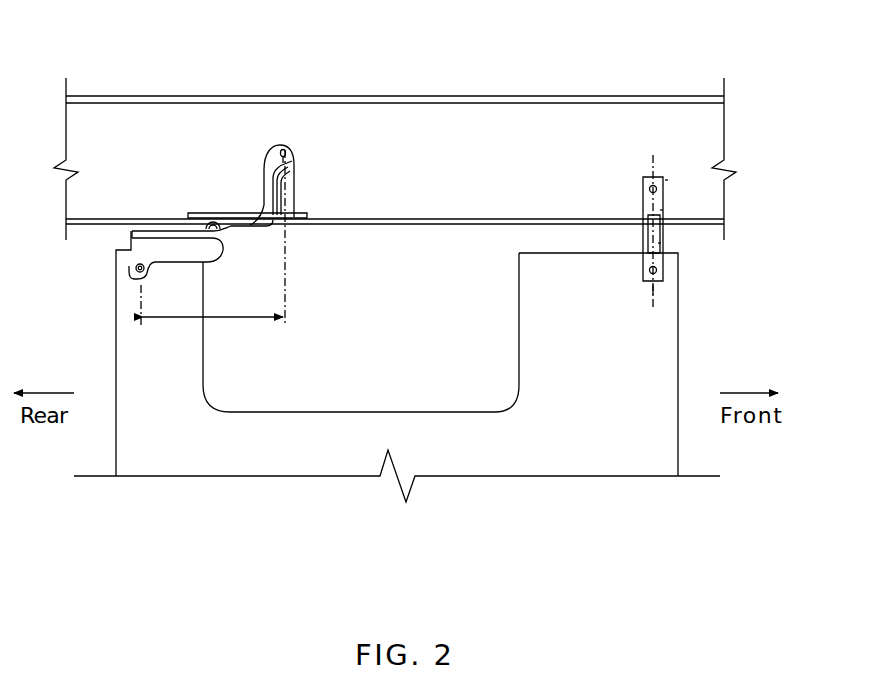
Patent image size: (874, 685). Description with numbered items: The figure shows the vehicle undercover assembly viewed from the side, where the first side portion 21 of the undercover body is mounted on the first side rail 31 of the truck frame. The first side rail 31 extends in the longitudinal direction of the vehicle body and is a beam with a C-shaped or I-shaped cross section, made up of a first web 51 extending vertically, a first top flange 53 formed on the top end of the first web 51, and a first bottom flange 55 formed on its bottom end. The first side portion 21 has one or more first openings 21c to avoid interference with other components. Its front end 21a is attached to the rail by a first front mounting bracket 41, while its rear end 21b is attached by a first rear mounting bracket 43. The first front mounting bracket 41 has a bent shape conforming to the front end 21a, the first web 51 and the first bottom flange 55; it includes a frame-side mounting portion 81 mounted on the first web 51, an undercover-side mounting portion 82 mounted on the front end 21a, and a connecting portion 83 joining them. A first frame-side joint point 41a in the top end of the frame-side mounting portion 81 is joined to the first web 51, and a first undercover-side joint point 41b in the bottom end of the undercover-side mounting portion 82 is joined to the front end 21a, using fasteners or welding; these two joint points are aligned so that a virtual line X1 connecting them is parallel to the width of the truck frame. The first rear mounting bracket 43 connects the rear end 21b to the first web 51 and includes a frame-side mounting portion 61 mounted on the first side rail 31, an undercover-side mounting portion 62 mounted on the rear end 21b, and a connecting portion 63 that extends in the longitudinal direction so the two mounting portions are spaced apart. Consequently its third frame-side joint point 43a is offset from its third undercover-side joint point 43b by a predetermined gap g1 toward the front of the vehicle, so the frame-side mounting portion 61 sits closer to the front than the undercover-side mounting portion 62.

The first side portion 21 is at (396, 379).
The front end 21a is at (684, 267).
The rear end 21b is at (111, 268).
The first opening 21c is at (412, 341).
The first side rail 31 is at (395, 132).
The first web 51 is at (537, 135).
The first top flange 53 is at (470, 101).
The first bottom flange 55 is at (403, 219).
The first front mounting bracket 41 is at (684, 228).
The first frame-side joint point 41a is at (662, 190).
The first undercover-side joint point 41b is at (659, 272).
The first rear mounting bracket 43 is at (208, 225).
The third frame-side joint point 43a is at (288, 150).
The third undercover-side joint point 43b is at (131, 276).
The frame-side mounting portion 61 is at (270, 165).
The undercover-side mounting portion 62 is at (212, 251).
The connecting portion 63 is at (246, 213).
The frame-side mounting portion 81 is at (665, 181).
The undercover-side mounting portion 82 is at (660, 244).
The connecting portion 83 is at (663, 211).
The predetermined gap g1 is at (212, 313).
The virtual line X1 is at (652, 292).